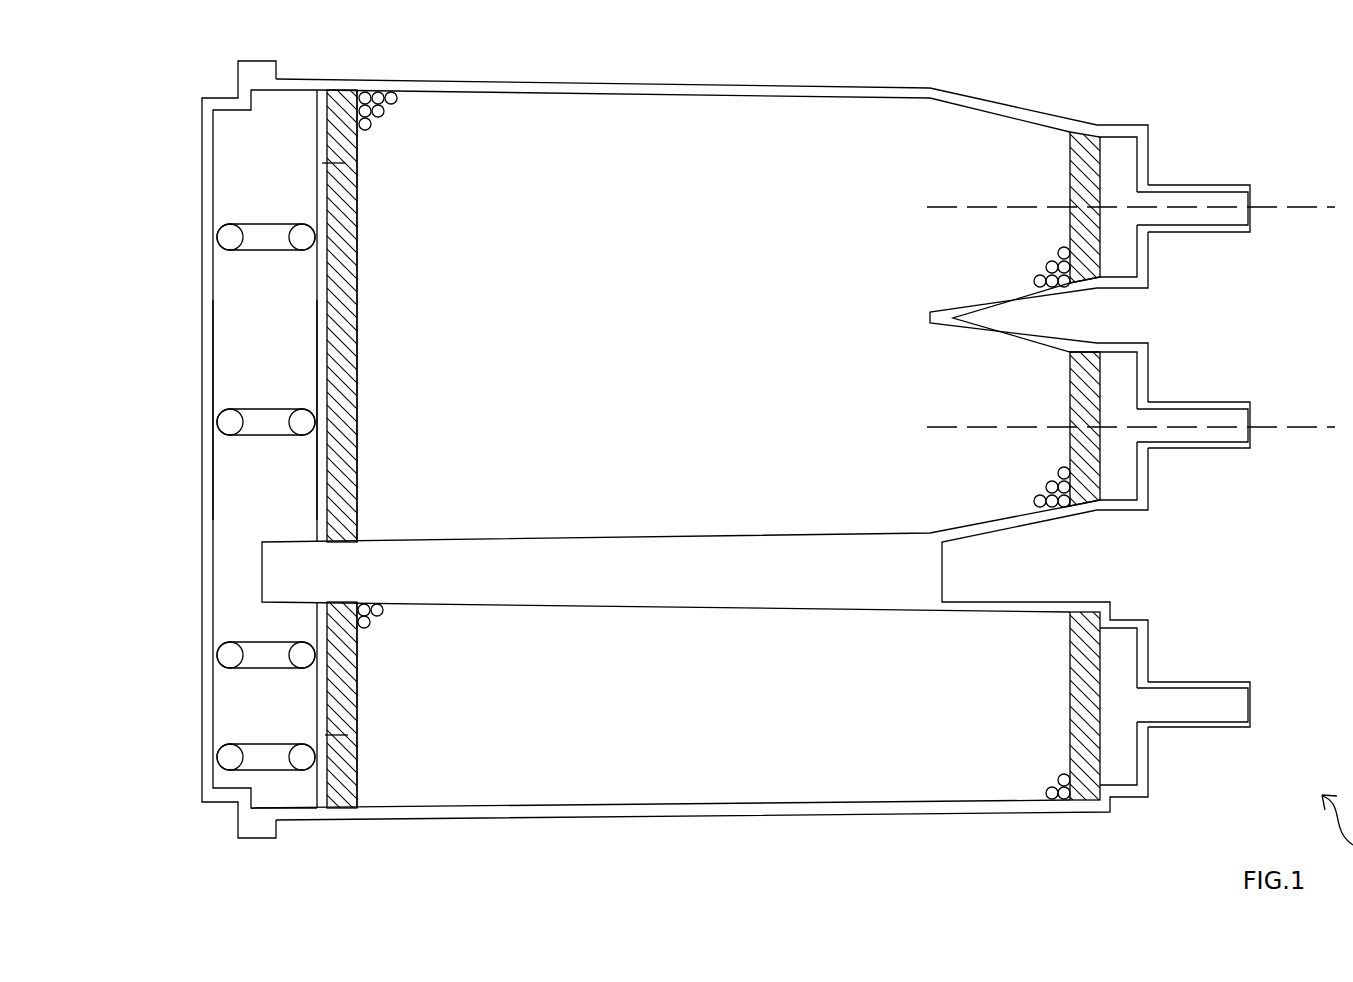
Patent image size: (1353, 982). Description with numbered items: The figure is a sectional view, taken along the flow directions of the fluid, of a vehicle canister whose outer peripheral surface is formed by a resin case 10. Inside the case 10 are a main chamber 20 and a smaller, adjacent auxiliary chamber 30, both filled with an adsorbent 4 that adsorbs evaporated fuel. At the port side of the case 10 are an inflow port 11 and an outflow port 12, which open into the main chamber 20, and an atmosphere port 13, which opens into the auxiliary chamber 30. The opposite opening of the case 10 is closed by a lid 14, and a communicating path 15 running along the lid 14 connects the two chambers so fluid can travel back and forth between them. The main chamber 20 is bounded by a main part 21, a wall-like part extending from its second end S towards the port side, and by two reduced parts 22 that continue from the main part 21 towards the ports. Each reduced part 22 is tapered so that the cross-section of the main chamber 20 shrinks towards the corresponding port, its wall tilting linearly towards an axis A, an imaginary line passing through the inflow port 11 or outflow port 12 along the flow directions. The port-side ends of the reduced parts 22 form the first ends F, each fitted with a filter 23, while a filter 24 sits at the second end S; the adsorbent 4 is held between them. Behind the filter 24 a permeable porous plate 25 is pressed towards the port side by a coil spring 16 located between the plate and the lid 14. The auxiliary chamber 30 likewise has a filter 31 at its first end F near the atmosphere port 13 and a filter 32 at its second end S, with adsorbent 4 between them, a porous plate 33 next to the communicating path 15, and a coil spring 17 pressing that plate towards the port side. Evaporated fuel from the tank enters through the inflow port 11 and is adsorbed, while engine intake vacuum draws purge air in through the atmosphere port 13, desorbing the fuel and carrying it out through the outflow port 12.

The case 10 is at (1176, 97).
The inflow port 11 is at (1224, 233).
The outflow port 12 is at (1222, 449).
The atmosphere port 13 is at (1222, 728).
The lid 14 is at (205, 502).
The communicating path 15 is at (244, 508).
The coil spring 16 is at (228, 420).
The coil spring 17 is at (228, 656).
The main chamber 20 is at (686, 340).
The main part 21 is at (698, 88).
The reduced part 22 is at (1036, 116).
The filter 23 is at (1083, 230).
The filter 24 is at (345, 220).
The porous plate 25 is at (345, 163).
The auxiliary chamber 30 is at (676, 718).
The filter 31 is at (1070, 718).
The filter 32 is at (350, 690).
The porous plate 33 is at (348, 735).
The adsorbent 4 is at (383, 114).
The first end F is at (1070, 178).
The second end S is at (357, 318).
The axis A is at (1290, 209).